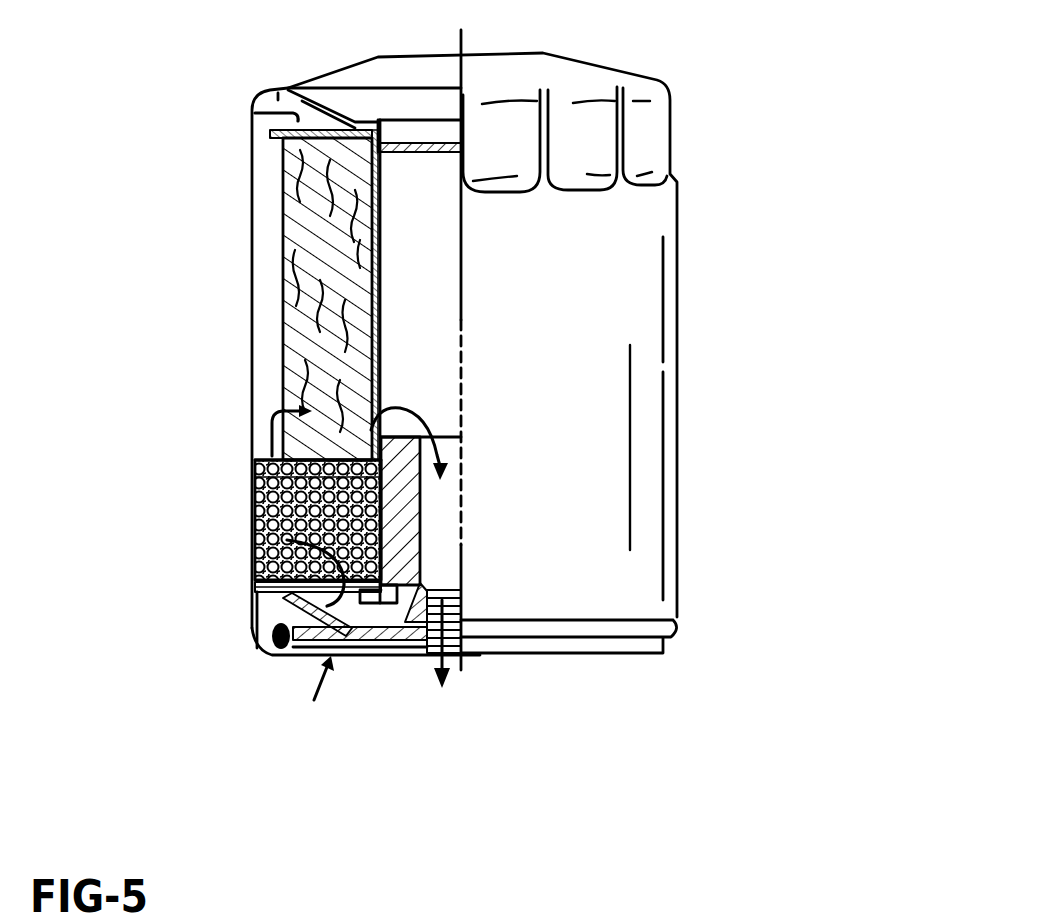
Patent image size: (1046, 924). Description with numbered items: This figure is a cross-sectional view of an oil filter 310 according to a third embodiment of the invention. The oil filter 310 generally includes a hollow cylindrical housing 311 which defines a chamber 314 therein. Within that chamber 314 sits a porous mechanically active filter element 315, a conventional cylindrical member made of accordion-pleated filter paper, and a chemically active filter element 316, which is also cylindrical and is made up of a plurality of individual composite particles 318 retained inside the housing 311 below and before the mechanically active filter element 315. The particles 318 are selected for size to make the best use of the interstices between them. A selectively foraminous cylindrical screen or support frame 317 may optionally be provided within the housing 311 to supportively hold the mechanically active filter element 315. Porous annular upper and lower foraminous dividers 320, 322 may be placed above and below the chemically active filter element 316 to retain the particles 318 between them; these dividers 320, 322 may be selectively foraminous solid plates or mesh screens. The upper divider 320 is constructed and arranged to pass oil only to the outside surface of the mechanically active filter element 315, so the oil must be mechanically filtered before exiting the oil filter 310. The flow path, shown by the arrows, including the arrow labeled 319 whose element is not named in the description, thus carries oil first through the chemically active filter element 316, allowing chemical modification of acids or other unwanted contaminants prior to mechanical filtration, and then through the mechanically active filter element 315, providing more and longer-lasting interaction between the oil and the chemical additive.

The oil filter 310 is at (745, 116).
The hollow cylindrical housing 311 is at (550, 371).
The chamber 314 is at (252, 296).
The mechanically active filter element 315 is at (283, 230).
The chemically active filter element 316 is at (241, 495).
The screen or support frame 317 is at (253, 115).
The composite particles 318 is at (252, 577).
The center tube flow path 319 is at (403, 398).
The upper foraminous divider 320 is at (253, 447).
The lower foraminous divider 322 is at (290, 595).